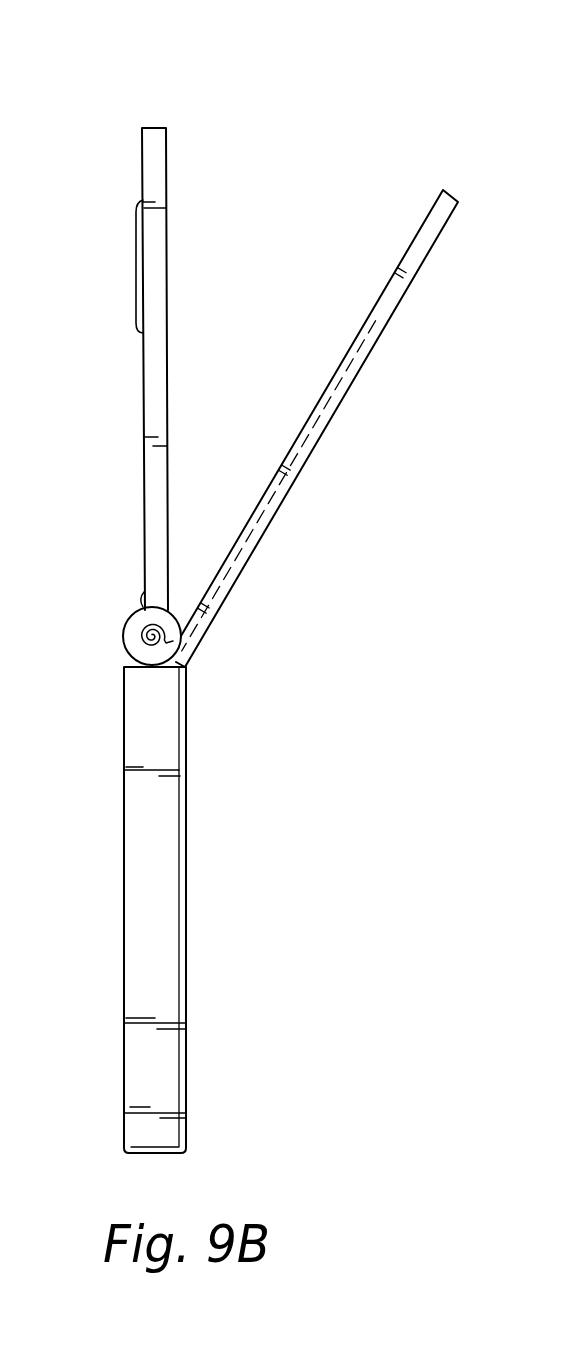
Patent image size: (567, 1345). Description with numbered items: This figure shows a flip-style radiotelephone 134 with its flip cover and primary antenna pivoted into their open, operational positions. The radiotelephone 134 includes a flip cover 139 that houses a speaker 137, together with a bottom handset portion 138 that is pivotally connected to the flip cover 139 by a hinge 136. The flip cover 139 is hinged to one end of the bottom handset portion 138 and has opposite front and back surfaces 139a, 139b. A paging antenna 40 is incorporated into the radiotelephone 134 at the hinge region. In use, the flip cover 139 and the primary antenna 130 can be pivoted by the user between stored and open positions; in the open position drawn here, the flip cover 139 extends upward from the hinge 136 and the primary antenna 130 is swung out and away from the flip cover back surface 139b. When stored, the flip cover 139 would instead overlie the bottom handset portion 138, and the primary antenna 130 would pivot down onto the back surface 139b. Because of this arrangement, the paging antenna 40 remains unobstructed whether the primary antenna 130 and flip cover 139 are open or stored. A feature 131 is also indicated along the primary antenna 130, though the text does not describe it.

The flip cover 139 is at (157, 128).
The front surface 139a is at (142, 447).
The back surface 139b is at (168, 358).
The speaker 137 is at (136, 248).
The hinge 136 is at (123, 612).
The paging antenna 40 is at (137, 640).
The primary antenna 130 is at (403, 300).
The groove 131 is at (283, 503).
The radiotelephone 134 is at (238, 693).
The bottom handset portion 138 is at (183, 888).